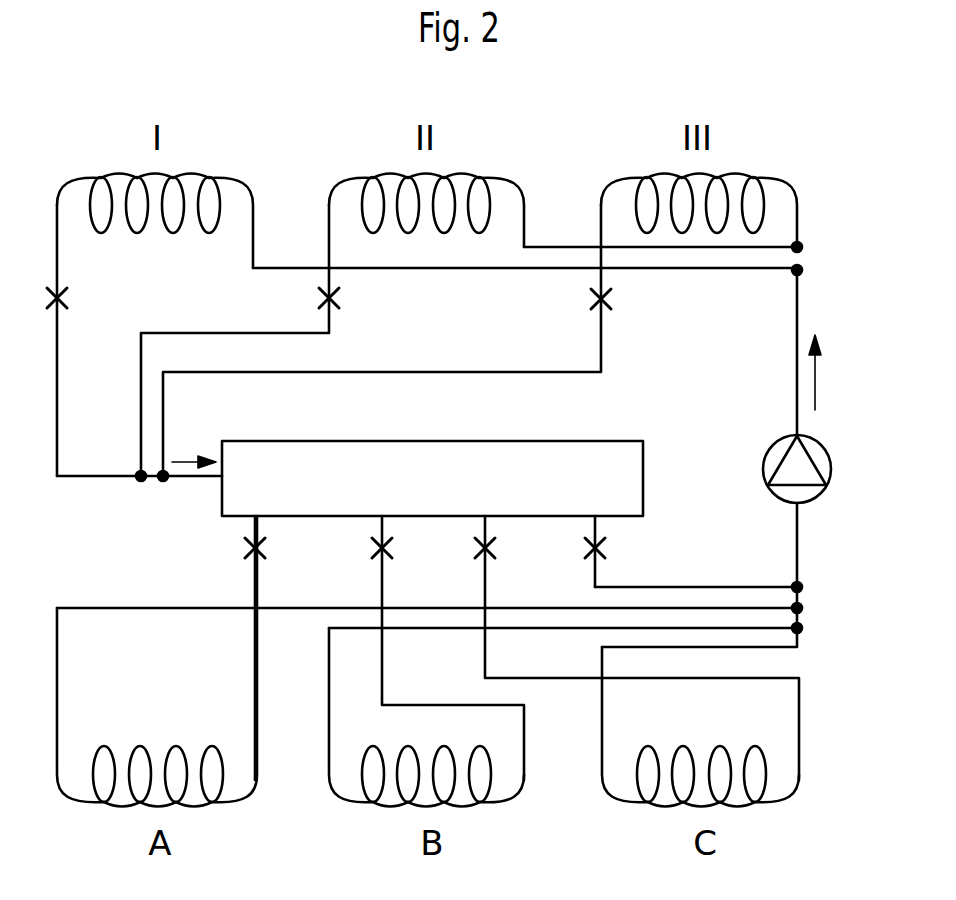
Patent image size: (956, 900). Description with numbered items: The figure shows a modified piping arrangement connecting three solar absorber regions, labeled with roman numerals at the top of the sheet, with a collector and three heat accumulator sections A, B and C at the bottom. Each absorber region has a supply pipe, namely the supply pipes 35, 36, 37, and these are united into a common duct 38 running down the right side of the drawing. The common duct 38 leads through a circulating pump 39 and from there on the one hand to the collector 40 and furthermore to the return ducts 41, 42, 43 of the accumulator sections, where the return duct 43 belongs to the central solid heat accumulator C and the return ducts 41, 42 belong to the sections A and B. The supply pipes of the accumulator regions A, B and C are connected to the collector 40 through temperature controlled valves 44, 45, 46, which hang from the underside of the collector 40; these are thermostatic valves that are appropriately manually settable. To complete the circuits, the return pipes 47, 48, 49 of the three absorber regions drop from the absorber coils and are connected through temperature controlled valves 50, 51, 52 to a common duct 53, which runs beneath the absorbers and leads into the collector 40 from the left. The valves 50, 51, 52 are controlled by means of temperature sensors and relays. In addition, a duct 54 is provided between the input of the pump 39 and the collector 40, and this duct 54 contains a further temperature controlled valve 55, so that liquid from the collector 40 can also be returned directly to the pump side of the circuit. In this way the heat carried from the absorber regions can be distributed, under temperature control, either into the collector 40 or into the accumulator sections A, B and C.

The supply pipe 35 is at (253, 230).
The supply pipe 36 is at (524, 230).
The supply pipe 37 is at (797, 230).
The common duct 38 is at (797, 315).
The circulating pump 39 is at (775, 448).
The collector 40 is at (545, 452).
The return duct 41 is at (57, 688).
The return duct 42 is at (329, 683).
The return duct 43 is at (799, 688).
The temperature controlled valve 44 is at (247, 550).
The temperature controlled valve 45 is at (374, 550).
The temperature controlled valve 46 is at (477, 550).
The return pipe 47 is at (57, 256).
The return pipe 48 is at (329, 256).
The return pipe 49 is at (601, 240).
The temperature controlled valve 50 is at (66, 298).
The temperature controlled valve 51 is at (337, 302).
The temperature controlled valve 52 is at (608, 302).
The common duct 53 is at (176, 478).
The duct 54 is at (740, 565).
The temperature controlled valve 55 is at (604, 548).